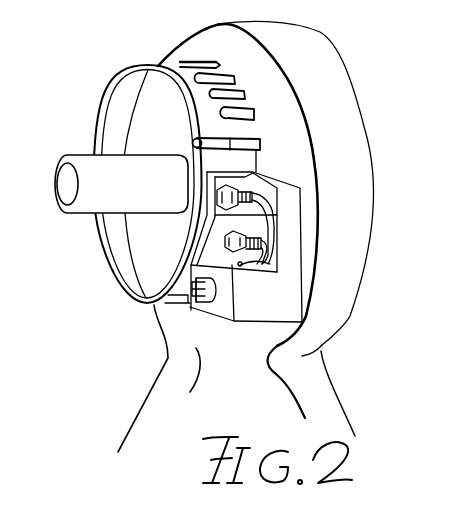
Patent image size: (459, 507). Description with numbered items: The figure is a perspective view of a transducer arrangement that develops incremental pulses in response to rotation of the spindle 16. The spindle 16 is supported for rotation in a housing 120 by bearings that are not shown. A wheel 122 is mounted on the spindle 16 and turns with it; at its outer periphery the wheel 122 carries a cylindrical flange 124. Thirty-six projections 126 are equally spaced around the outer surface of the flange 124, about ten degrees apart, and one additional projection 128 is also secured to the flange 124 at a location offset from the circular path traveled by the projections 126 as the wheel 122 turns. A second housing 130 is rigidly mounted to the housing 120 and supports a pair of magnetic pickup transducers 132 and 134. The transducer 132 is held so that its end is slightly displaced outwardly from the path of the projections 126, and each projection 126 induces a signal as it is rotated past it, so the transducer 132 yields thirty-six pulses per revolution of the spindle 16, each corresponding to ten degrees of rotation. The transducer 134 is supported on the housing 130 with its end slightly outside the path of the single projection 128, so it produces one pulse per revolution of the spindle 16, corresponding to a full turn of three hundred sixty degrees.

The spindle 16 is at (78, 166).
The housing 120 is at (403, 82).
The wheel 122 is at (137, 238).
The cylindrical flange 124 is at (152, 70).
The projections 126 is at (214, 65).
The additional projection 128 is at (200, 143).
The housing 130 is at (290, 295).
The magnetic pickup transducer 132 is at (224, 246).
The magnetic pickup transducer 134 is at (222, 197).